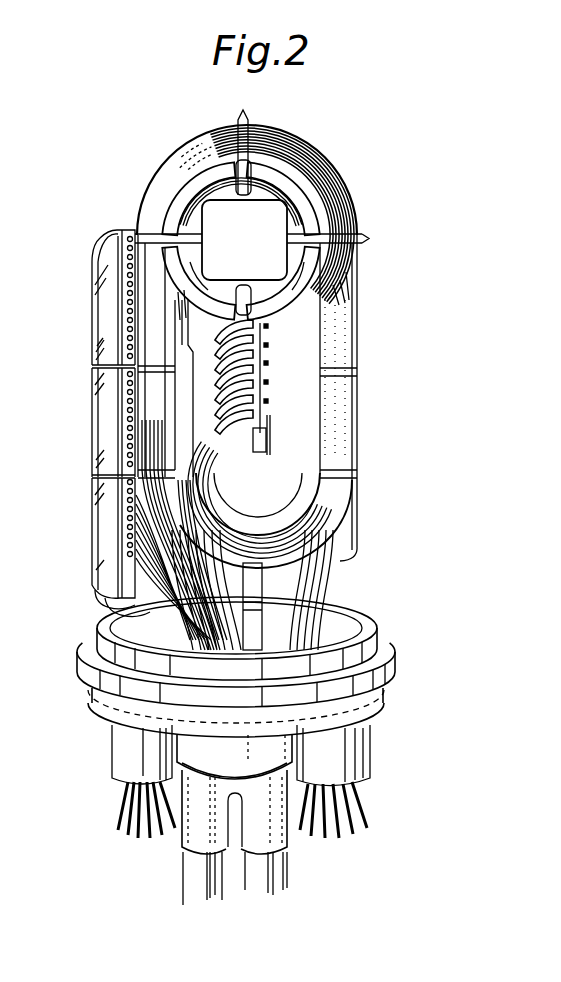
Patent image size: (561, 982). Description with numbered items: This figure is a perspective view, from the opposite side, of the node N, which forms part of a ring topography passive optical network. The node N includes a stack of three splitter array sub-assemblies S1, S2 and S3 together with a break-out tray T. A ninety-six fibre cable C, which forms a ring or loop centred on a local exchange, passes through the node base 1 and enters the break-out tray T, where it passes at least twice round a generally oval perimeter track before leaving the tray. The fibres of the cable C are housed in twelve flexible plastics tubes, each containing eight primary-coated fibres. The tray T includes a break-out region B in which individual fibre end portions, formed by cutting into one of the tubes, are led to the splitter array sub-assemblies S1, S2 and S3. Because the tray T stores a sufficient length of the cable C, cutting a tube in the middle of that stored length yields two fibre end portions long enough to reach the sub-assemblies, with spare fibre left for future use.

The 96 fibre cable C is at (177, 158).
The node N is at (332, 163).
The splitter array sub-assembly S3 is at (92, 335).
The splitter array sub-assembly S2 is at (92, 412).
The splitter array sub-assembly S1 is at (92, 498).
The break-out region B is at (280, 403).
The break-out tray T is at (305, 458).
The node base 1 is at (395, 639).